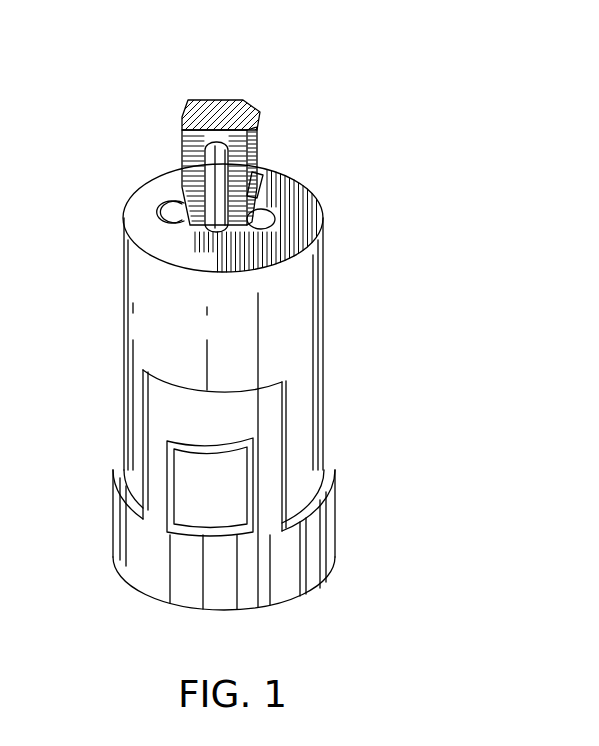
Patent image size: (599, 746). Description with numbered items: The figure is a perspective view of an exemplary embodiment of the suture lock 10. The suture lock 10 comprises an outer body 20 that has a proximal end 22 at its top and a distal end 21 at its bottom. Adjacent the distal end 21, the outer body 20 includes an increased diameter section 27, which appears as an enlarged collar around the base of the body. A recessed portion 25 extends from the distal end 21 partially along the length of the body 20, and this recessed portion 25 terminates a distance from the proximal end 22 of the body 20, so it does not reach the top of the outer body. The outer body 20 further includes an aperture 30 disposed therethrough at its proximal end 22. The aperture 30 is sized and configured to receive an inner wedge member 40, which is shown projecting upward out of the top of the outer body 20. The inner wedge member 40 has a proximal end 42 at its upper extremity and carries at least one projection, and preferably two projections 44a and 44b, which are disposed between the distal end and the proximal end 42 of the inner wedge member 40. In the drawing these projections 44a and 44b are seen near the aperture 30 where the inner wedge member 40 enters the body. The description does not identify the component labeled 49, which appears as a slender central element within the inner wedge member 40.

The suture lock 10 is at (104, 160).
The outer body 20 is at (298, 318).
The distal end 21 is at (143, 590).
The proximal end 22 is at (317, 206).
The recessed portion 25 is at (187, 467).
The increased diameter section 27 is at (312, 545).
The aperture 30 is at (172, 208).
The inner wedge member 40 is at (192, 100).
The proximal end of the inner wedge member 42 is at (233, 100).
The projection 44a is at (182, 187).
The projection 44b is at (258, 175).
The center pin 49 is at (208, 157).